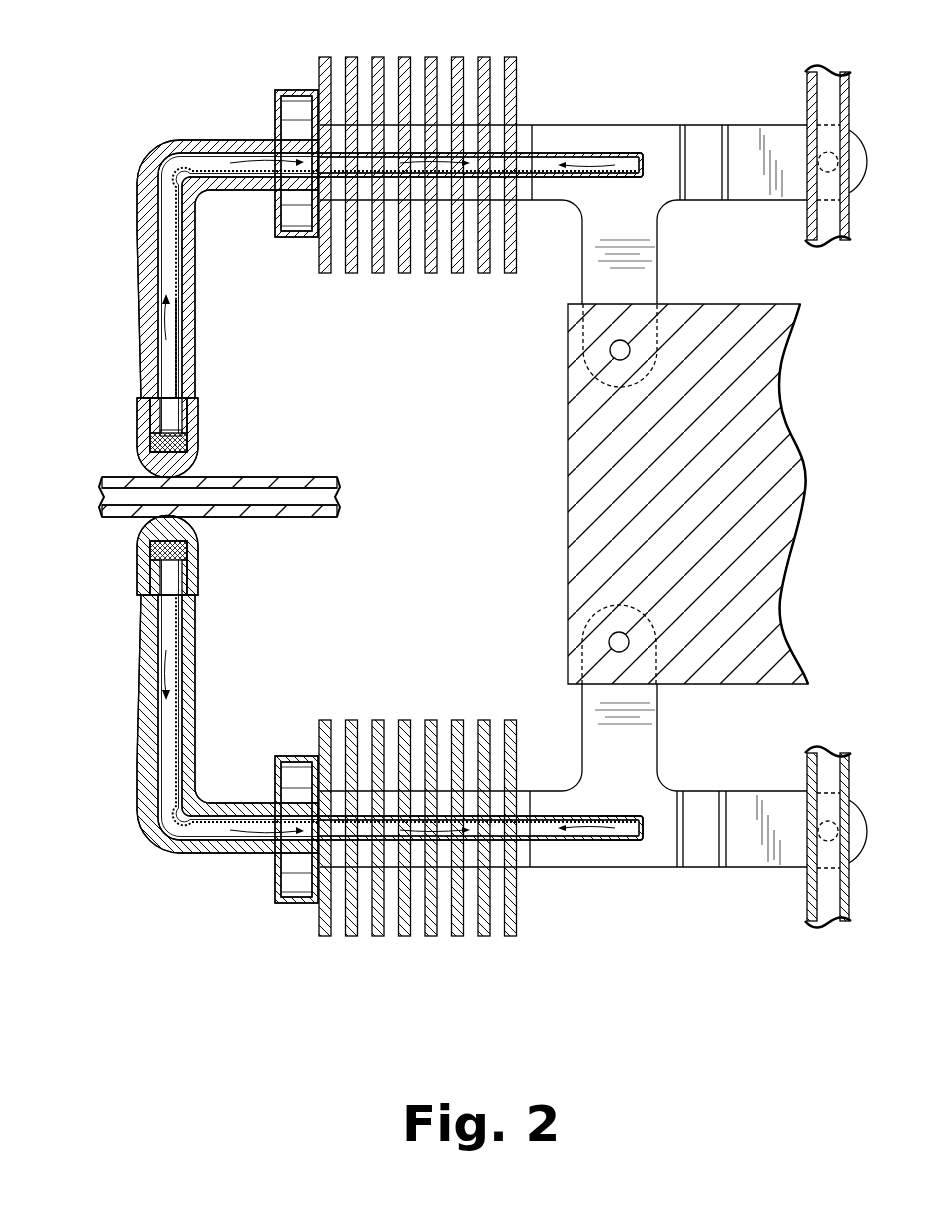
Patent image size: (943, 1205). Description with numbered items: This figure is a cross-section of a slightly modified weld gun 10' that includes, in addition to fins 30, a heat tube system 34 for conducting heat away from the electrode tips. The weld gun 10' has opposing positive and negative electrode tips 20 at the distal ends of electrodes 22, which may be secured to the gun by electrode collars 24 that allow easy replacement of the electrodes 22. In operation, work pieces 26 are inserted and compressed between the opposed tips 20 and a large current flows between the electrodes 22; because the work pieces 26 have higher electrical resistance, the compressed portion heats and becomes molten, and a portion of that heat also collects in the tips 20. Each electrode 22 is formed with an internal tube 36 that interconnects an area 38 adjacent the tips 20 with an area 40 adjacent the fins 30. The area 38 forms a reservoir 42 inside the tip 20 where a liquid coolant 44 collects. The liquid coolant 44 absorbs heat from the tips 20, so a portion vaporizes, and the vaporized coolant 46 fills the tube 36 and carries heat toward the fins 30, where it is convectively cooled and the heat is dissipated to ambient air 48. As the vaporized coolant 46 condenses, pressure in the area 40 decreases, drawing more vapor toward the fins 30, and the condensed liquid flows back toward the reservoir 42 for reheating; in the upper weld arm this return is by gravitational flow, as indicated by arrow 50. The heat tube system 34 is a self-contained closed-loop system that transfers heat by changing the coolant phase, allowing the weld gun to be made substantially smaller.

The weld gun 10' is at (79, 116).
The ambient air 48 is at (243, 42).
The electrode tips 20 is at (197, 460).
The electrodes 22 is at (195, 322).
The electrode collars 24 is at (277, 228).
The work pieces 26 is at (105, 478).
The fins 30 is at (430, 275).
The heat tube system 34 is at (555, 145).
The internal tube 36 is at (605, 152).
The area adjacent the electrode tips 38 is at (145, 603).
The area adjacent the fins 40 is at (508, 823).
The reservoir 42 is at (177, 435).
The liquid coolant 44 is at (142, 430).
The vaporized coolant 46 is at (162, 298).
The arrow 50 is at (173, 390).